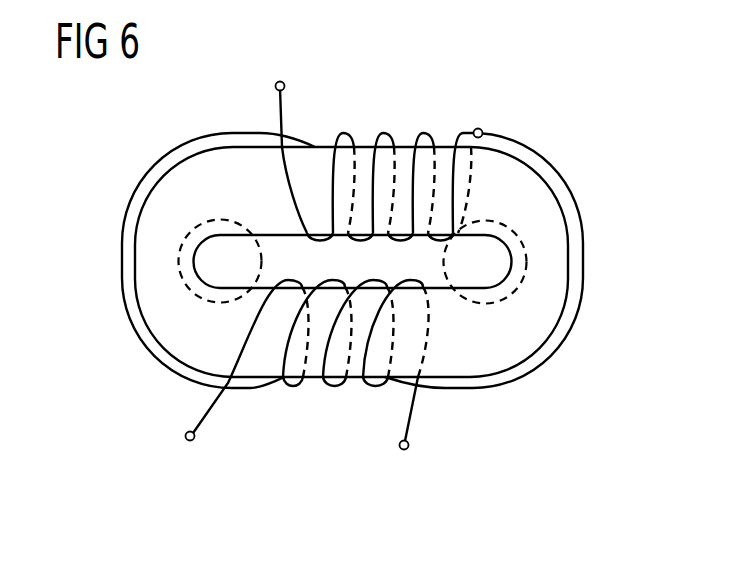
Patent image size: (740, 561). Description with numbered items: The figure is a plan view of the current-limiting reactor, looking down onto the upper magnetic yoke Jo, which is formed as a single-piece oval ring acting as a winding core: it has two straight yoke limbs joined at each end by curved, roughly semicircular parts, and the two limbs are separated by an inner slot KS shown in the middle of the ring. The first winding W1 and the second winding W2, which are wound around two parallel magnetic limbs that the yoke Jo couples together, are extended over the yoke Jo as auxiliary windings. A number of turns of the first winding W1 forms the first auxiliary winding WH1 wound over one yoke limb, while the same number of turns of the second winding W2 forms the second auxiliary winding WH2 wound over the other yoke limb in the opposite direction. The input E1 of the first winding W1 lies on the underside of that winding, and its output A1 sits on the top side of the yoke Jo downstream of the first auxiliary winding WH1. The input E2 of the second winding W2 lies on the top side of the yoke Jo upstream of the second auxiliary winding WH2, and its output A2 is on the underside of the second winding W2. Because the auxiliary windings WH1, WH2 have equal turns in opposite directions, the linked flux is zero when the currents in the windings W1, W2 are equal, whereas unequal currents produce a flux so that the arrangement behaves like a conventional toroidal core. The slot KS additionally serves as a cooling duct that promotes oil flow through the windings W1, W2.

The upper magnetic yoke Jo is at (358, 140).
The inner slot KS is at (481, 256).
The first winding W1 is at (122, 260).
The second winding W2 is at (583, 258).
The first auxiliary winding WH1 is at (373, 384).
The second auxiliary winding WH2 is at (382, 138).
The input of the first winding E1 is at (185, 435).
The input of the second winding E2 is at (275, 86).
The output of the first winding A1 is at (409, 445).
The output of the second winding A2 is at (479, 129).